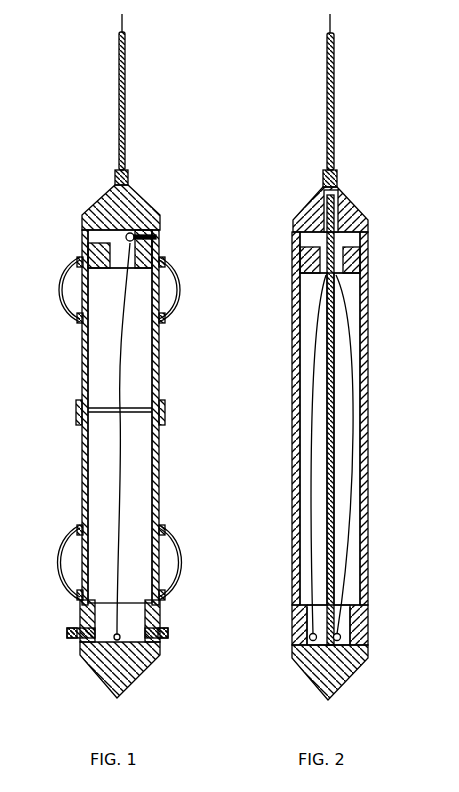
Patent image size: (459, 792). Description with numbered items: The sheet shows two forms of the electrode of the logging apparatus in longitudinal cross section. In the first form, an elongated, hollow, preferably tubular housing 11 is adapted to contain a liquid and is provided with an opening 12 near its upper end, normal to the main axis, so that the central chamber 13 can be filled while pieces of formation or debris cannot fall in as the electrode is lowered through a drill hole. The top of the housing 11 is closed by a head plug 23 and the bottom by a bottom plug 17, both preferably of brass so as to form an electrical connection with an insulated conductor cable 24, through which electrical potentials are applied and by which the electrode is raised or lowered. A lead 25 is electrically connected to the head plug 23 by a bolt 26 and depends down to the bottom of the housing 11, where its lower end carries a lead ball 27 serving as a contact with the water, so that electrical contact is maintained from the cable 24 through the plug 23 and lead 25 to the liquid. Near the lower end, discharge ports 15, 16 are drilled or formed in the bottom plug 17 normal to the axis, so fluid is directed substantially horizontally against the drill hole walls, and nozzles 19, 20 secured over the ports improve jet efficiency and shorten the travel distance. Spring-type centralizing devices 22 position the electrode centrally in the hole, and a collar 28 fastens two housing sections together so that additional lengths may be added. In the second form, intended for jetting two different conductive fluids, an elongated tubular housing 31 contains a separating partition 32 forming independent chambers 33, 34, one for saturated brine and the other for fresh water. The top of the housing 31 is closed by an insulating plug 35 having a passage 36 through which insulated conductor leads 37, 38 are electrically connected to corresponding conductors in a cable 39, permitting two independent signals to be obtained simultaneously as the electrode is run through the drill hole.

In FIG. 1, the housing 11 is at (82, 377).
In FIG. 1, the opening 12 is at (92, 233).
In FIG. 1, the central chamber 13 is at (102, 479).
In FIG. 1, the discharge port 15 is at (67, 634).
In FIG. 2, the discharge port 15 is at (308, 638).
In FIG. 1, the discharge port 16 is at (170, 635).
In FIG. 2, the discharge port 16 is at (342, 638).
In FIG. 1, the bottom plug 17 is at (115, 680).
In FIG. 2, the bottom plug 17 is at (326, 680).
In FIG. 1, the nozzle 19 is at (72, 628).
In FIG. 1, the nozzle 20 is at (160, 628).
In FIG. 1, the centralizing device 22 is at (166, 272).
In FIG. 1, the head plug 23 is at (103, 200).
In FIG. 1, the insulated conductor cable 24 is at (119, 88).
In FIG. 1, the lead 25 is at (120, 442).
In FIG. 1, the bolt 26 is at (158, 237).
In FIG. 1, the lead ball 27 is at (110, 650).
In FIG. 2, the lead ball 27 is at (306, 644).
In FIG. 1, the collar 28 is at (80, 411).
In FIG. 2, the tubular housing 31 is at (315, 438).
In FIG. 2, the separating partition 32 is at (327, 378).
In FIG. 2, the chamber 33 is at (307, 412).
In FIG. 2, the chamber 34 is at (352, 412).
In FIG. 2, the insulating plug 35 is at (340, 205).
In FIG. 2, the passage 36 is at (368, 213).
In FIG. 2, the insulated conductor lead 37 is at (315, 310).
In FIG. 2, the insulated conductor lead 38 is at (348, 310).
In FIG. 2, the cable 39 is at (327, 90).